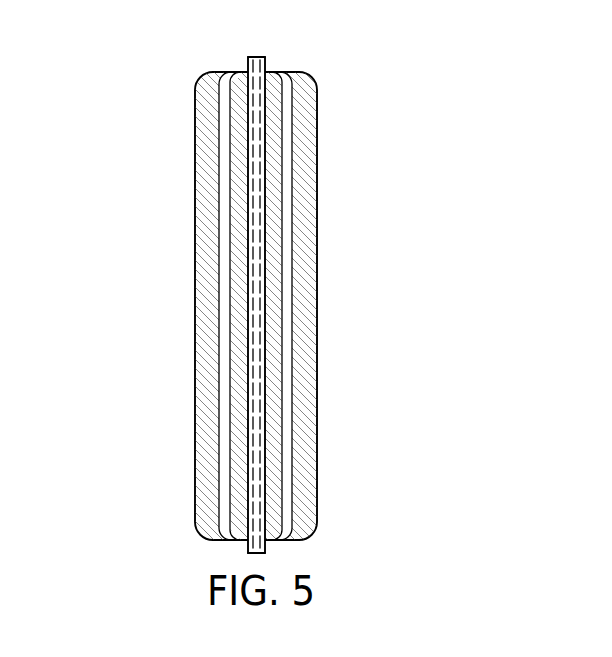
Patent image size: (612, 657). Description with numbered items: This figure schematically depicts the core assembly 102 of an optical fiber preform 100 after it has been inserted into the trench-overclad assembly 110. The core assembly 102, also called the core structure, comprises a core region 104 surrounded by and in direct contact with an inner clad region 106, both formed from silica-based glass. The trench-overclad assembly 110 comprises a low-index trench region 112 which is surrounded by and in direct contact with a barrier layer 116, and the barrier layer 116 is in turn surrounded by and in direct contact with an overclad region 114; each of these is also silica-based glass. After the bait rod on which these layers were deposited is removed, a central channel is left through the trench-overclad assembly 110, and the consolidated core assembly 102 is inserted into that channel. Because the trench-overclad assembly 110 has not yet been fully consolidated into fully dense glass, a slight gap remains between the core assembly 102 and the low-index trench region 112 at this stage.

The optical fiber preform 100 is at (306, 285).
The core assembly 102 is at (252, 281).
The core region 104 is at (265, 65).
The inner clad region 106 is at (248, 65).
The trench-overclad assembly 110 is at (306, 310).
The low-index trench region 112 is at (124, 315).
The overclad region 114 is at (196, 393).
The barrier layer 116 is at (226, 313).